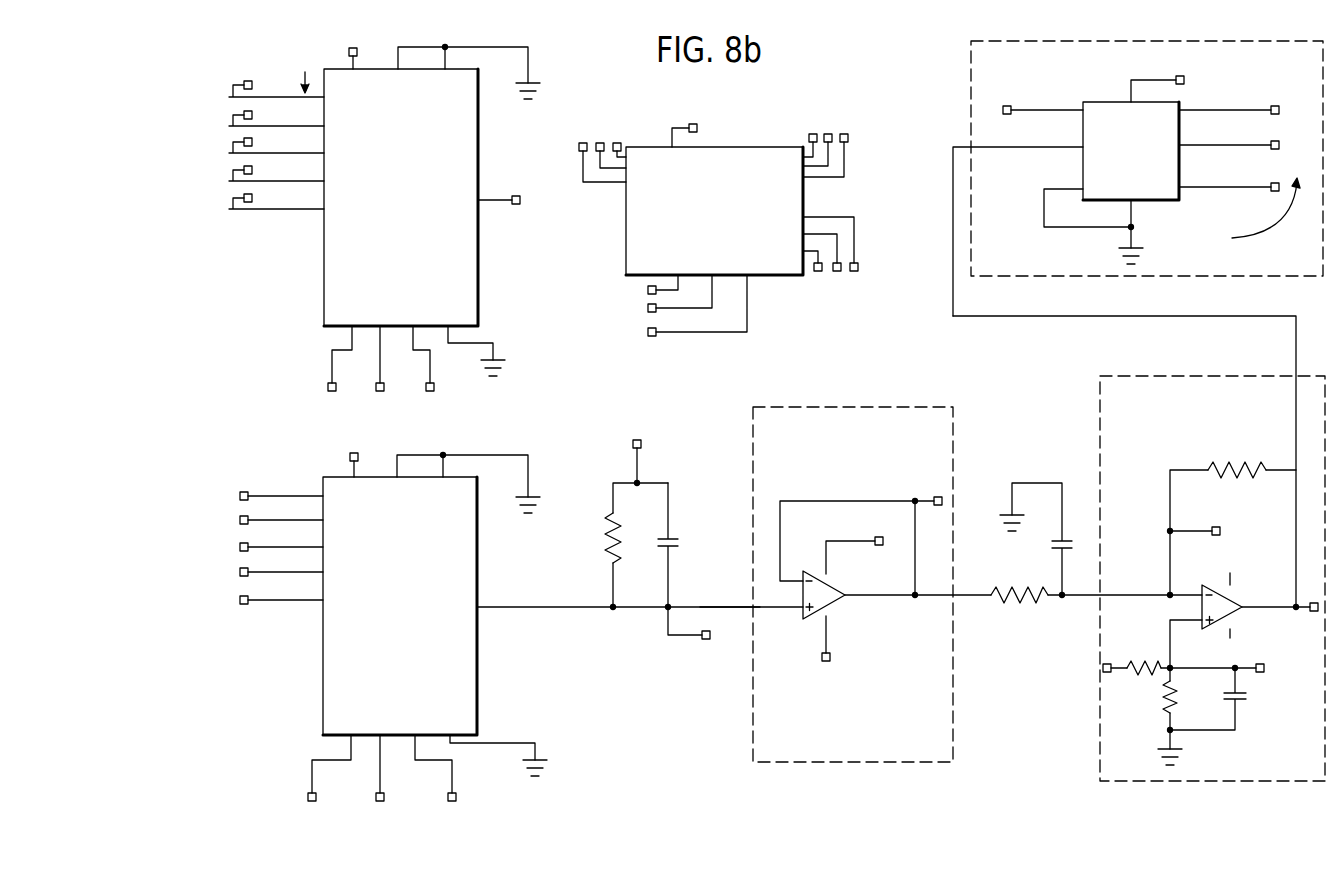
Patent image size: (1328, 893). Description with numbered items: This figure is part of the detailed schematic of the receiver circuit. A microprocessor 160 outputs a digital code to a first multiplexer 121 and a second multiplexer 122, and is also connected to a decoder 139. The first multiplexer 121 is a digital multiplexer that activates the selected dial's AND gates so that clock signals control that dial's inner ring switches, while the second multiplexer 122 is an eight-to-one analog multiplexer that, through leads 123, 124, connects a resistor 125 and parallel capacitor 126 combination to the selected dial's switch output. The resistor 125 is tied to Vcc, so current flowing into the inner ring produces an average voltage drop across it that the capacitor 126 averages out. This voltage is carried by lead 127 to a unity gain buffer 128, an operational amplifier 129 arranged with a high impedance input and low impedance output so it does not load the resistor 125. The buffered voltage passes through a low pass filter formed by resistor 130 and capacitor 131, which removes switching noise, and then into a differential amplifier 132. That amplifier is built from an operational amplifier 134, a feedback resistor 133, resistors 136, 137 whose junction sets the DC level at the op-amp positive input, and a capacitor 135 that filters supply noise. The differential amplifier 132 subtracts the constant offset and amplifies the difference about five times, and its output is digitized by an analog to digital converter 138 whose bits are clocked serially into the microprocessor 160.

The first multiplexer 121 is at (405, 207).
The second multiplexer 122 is at (404, 604).
The lead 123 is at (285, 491).
The lead 124 is at (537, 607).
The resistor 125 is at (608, 537).
The capacitor 126 is at (678, 542).
The lead 127 is at (703, 598).
The unity gain buffer 128 is at (848, 407).
The operational amplifier 129 is at (805, 618).
The resistor 130 is at (1010, 603).
The capacitor 131 is at (1051, 547).
The differential amplifier 132 is at (1200, 376).
The feedback resistor 133 is at (1226, 467).
The operational amplifier 134 is at (1214, 584).
The capacitor 135 is at (1244, 703).
The resistor 136 is at (1162, 700).
The resistor 137 is at (1134, 665).
The analog to digital converter 138 is at (971, 75).
The decoder 139 is at (616, 131).
The microprocessor 160 is at (721, 214).